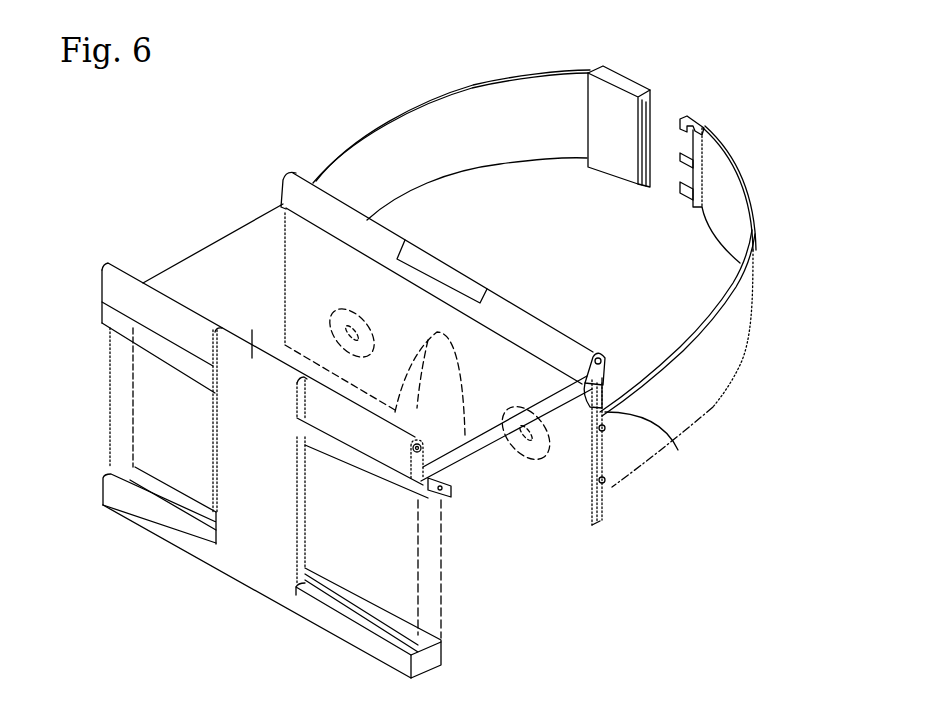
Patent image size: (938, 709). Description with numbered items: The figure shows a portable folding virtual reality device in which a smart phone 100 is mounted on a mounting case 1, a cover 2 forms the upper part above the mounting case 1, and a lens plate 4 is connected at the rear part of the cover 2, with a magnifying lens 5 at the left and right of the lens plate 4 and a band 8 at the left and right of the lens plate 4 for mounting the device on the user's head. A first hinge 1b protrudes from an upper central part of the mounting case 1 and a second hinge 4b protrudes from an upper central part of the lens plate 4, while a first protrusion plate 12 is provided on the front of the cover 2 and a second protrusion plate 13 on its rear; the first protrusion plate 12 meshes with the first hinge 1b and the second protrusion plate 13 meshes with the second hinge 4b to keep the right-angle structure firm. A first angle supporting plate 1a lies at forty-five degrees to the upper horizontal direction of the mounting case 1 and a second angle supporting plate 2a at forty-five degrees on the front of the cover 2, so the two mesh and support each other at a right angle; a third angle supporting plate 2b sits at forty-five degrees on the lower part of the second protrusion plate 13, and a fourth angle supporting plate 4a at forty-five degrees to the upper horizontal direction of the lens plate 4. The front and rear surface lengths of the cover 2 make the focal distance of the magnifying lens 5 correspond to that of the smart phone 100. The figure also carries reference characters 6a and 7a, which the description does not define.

The mounting case 1 is at (377, 622).
The first angle supporting plate 1a is at (420, 505).
The first hinge 1b is at (253, 360).
The cover 2 is at (172, 273).
The second angle supporting plate 2a is at (446, 496).
The third angle supporting plate 2b is at (650, 445).
The lens plate 4 is at (605, 512).
The fourth angle supporting plate 4a is at (604, 378).
The second hinge 4b is at (447, 267).
The magnifying lens 5 is at (348, 317).
The connecting rod 6a is at (433, 447).
The pin hole 7a is at (603, 357).
The band 8 is at (493, 107).
The first protrusion plate 12 is at (117, 293).
The second protrusion plate 13 is at (336, 208).
The smart phone 100 is at (443, 596).